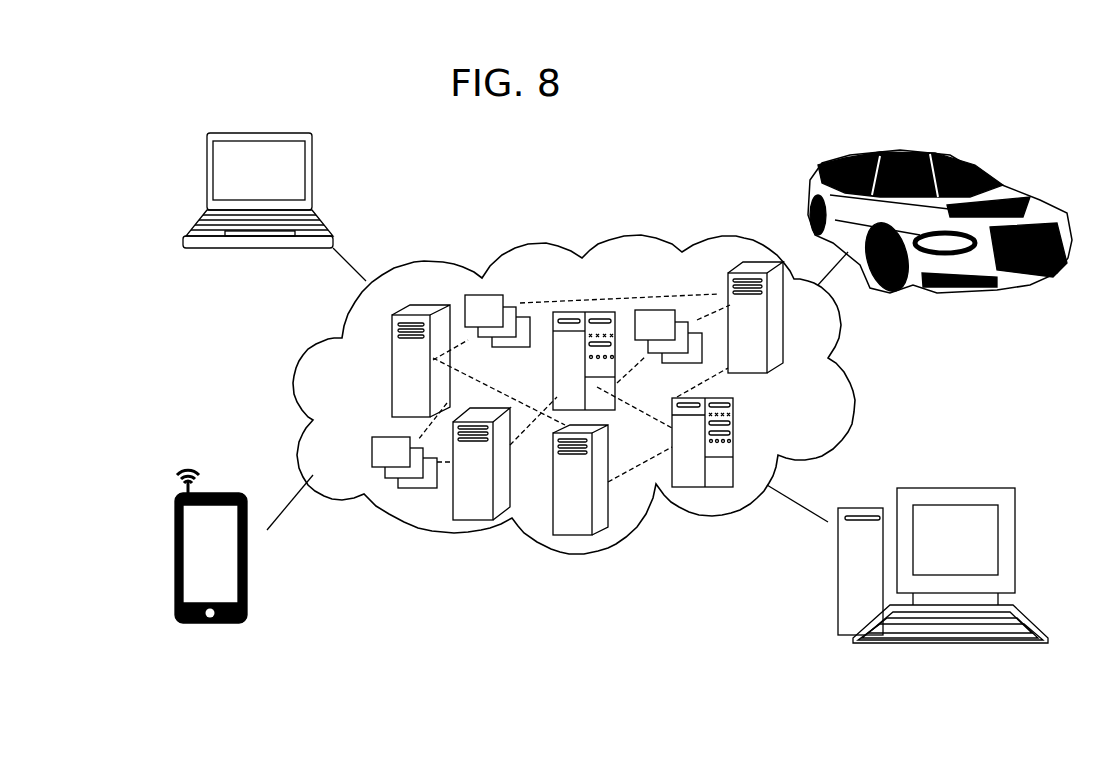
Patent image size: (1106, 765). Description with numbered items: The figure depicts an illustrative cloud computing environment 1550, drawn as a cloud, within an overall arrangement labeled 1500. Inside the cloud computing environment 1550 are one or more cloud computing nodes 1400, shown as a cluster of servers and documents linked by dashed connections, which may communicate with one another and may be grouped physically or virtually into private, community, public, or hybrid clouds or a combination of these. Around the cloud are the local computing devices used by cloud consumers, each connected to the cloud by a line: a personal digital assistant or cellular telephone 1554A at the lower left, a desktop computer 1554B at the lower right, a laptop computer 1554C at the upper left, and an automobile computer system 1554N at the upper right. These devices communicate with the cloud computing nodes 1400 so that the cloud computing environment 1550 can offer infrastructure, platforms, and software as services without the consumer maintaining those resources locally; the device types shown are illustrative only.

The networked computing environment 1500 is at (974, 103).
The cloud computing environment 1550 is at (858, 378).
The cloud computing nodes 1400 is at (795, 391).
The personal digital assistant (PDA) or cellular telephone 1554A is at (267, 585).
The desktop computer 1554B is at (860, 568).
The laptop computer 1554C is at (320, 195).
The automobile computer system 1554N is at (805, 190).